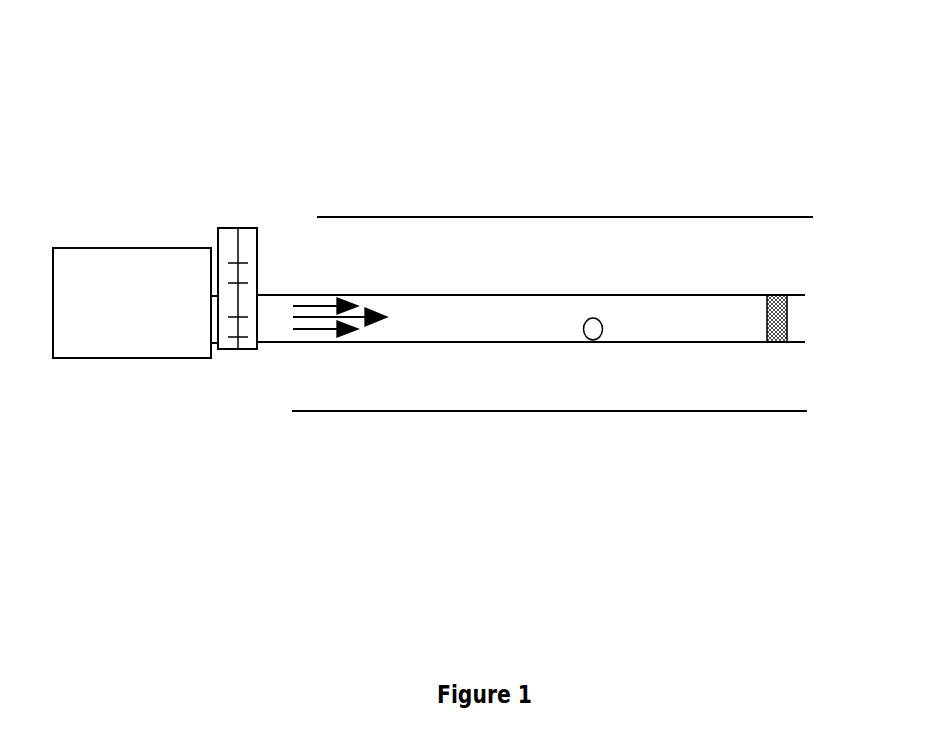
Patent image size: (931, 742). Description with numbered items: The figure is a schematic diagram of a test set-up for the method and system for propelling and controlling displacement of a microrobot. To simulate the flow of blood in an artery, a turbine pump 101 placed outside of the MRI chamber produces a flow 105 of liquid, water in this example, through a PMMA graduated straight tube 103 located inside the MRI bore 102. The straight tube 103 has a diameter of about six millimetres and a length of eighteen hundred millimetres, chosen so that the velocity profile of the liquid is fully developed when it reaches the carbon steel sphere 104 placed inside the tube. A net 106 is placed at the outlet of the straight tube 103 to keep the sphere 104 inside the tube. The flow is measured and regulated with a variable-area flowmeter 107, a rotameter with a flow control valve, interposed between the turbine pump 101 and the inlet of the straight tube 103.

The turbine pump 101 is at (127, 338).
The MRI bore 102 is at (738, 215).
The graduated straight tube 103 is at (670, 337).
The carbon steel sphere 104 is at (593, 337).
The flow 105 is at (310, 320).
The net 106 is at (783, 337).
The variable-area flowmeter 107 is at (245, 242).